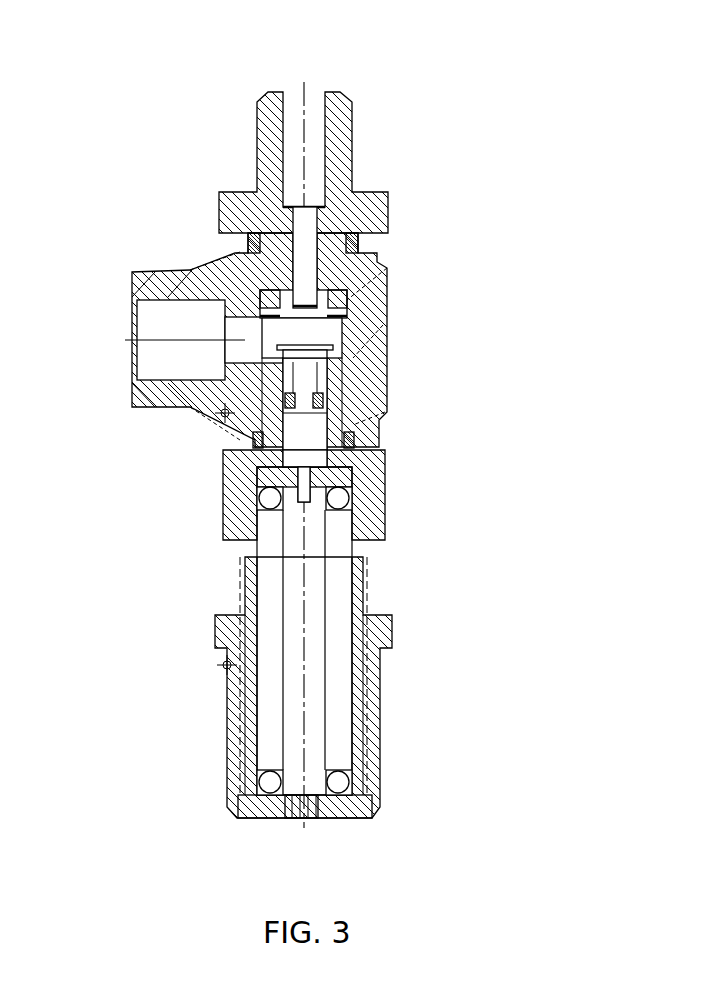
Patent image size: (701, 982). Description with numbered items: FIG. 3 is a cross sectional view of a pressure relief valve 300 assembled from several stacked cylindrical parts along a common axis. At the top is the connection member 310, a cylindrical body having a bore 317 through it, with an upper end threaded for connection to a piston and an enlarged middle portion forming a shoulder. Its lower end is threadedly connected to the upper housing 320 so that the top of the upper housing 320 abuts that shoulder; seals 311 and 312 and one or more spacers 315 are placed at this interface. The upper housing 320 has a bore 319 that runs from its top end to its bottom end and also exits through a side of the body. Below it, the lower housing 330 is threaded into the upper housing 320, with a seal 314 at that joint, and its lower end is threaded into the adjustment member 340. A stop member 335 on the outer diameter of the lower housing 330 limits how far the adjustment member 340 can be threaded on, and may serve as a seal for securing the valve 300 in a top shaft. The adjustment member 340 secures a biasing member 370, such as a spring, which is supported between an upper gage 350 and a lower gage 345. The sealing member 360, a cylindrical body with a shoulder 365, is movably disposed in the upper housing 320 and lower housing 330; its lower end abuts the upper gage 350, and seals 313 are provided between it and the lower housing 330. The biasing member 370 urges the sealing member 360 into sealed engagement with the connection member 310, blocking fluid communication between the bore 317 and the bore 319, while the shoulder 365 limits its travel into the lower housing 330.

The pressure relief valve 300 is at (273, 422).
The connection member 310 is at (343, 137).
The seal 311 is at (363, 245).
The seal 312 is at (275, 270).
The seal 313 is at (325, 402).
The seal 314 is at (356, 438).
The spacer 315 is at (385, 282).
The bore 317 is at (315, 102).
The bore 319 is at (153, 323).
The upper housing 320 is at (375, 318).
The lower housing 330 is at (222, 486).
The stop member 335 is at (227, 625).
The adjustment member 340 is at (245, 724).
The lower gage 345 is at (242, 802).
The upper gage 350 is at (222, 462).
The sealing member 360 is at (312, 457).
The shoulder 365 is at (335, 349).
The biasing member 370 is at (345, 781).